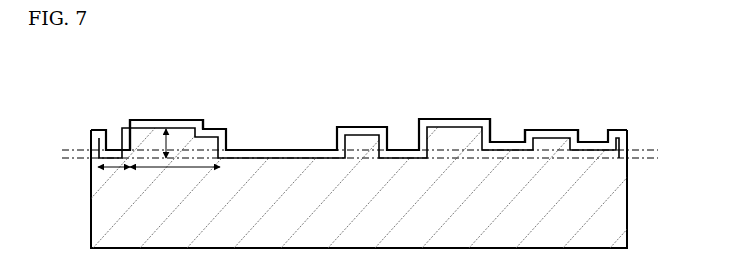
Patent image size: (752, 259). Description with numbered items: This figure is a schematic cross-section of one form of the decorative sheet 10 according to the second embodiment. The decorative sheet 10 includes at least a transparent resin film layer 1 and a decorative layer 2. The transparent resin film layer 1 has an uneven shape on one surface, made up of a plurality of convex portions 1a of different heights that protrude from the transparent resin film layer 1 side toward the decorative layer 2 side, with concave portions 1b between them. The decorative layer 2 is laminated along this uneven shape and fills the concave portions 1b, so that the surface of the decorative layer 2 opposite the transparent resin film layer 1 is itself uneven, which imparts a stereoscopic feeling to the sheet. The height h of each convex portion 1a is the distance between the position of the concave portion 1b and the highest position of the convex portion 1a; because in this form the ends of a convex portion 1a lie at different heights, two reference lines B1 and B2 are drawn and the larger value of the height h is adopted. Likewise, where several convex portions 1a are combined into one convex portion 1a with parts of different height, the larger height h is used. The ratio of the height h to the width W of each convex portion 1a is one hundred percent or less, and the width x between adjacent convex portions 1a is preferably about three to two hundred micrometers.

The transparent resin film layer 1 is at (628, 203).
The decorative layer 2 is at (628, 138).
The convex portion 1a is at (178, 120).
The concave portion 1b is at (273, 150).
The decorative sheet 10 is at (578, 107).
The line B1 is at (356, 147).
The line B2 is at (356, 161).
The width between the convex portions x is at (114, 175).
The width of the convex portion W is at (175, 176).
The height of the convex portion h is at (157, 143).